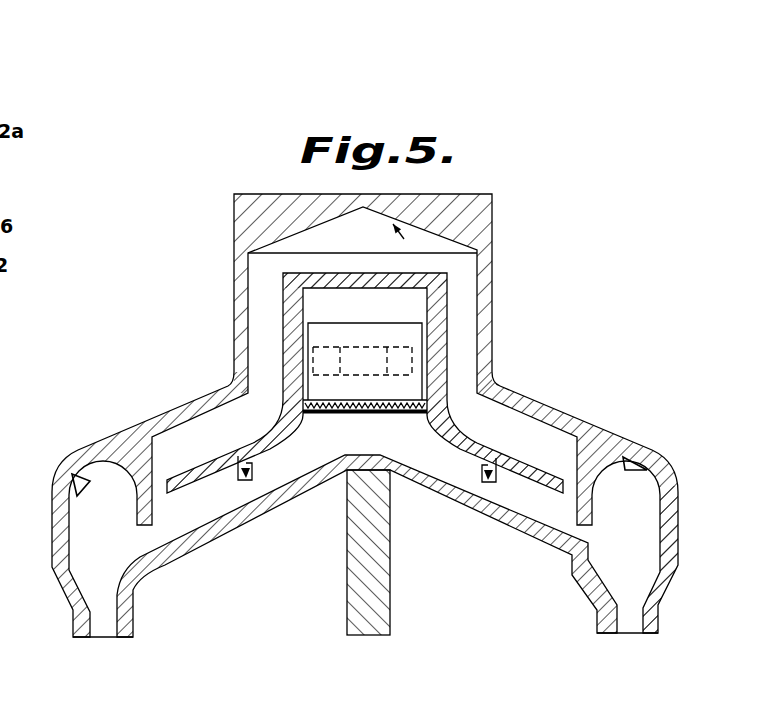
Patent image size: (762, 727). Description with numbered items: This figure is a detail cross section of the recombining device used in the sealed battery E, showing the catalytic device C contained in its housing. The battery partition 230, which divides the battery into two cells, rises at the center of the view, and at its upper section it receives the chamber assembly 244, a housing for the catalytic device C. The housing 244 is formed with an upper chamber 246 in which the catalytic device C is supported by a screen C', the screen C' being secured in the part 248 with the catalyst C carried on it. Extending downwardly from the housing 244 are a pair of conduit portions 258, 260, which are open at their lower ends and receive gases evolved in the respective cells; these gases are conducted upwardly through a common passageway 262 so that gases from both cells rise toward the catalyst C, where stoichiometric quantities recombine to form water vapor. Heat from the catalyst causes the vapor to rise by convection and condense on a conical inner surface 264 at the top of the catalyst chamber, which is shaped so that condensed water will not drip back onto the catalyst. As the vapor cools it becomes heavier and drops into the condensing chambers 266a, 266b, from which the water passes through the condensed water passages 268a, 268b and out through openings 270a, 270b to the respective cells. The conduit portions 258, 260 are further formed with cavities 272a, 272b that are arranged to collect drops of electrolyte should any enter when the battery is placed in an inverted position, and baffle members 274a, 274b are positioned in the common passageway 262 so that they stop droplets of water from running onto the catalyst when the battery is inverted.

The battery E is at (472, 190).
The battery partition 230 is at (378, 538).
The chamber assembly 244 is at (491, 243).
The upper chamber 246 is at (455, 280).
The part 248 is at (292, 303).
The conduit portion 258 is at (52, 548).
The conduit portion 260 is at (678, 490).
The common passageway 262 is at (547, 418).
The conical inner surface 264 is at (492, 214).
The condensing chamber 266a is at (272, 338).
The condensing chamber 266b is at (455, 298).
The condensed water passage 268a is at (188, 443).
The condensed water passage 268b is at (540, 437).
The opening 270a is at (103, 622).
The opening 270b is at (630, 617).
The cavity 272a is at (74, 475).
The cavity 272b is at (646, 466).
The baffle member 274a is at (245, 482).
The baffle member 274b is at (493, 484).
The composite catalytic device C is at (417, 355).
The screen C' is at (365, 422).